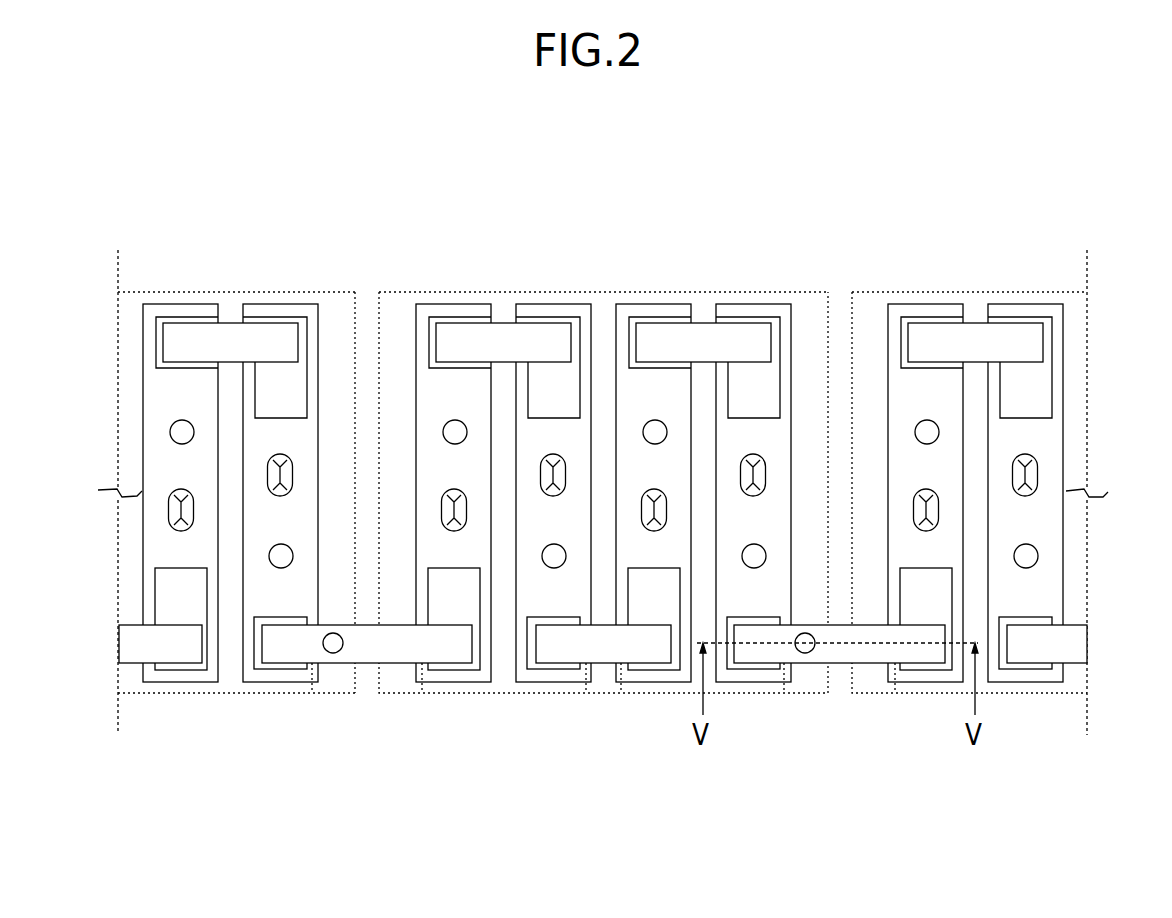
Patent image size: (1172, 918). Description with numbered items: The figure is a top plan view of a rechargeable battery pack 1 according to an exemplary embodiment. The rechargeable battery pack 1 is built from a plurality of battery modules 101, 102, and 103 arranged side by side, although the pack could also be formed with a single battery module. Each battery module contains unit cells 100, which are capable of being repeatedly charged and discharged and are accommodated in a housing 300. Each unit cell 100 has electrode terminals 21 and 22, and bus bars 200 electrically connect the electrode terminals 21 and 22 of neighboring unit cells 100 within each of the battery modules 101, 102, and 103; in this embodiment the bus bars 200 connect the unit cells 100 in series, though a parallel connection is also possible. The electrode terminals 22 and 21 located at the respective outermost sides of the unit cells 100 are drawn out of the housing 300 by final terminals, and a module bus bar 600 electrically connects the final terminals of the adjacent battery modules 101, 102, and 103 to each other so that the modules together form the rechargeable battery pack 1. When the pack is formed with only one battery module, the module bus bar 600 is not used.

The rechargeable battery pack 1 is at (423, 179).
The electrode terminal 21 is at (750, 310).
The electrode terminal 22 is at (654, 310).
The unit cell 100 is at (791, 437).
The battery module 101 is at (228, 708).
The battery module 102 is at (600, 708).
The battery module 103 is at (1025, 708).
The bus bar 200 is at (503, 338).
The housing 300 is at (572, 295).
The module bus bar 600 is at (838, 652).